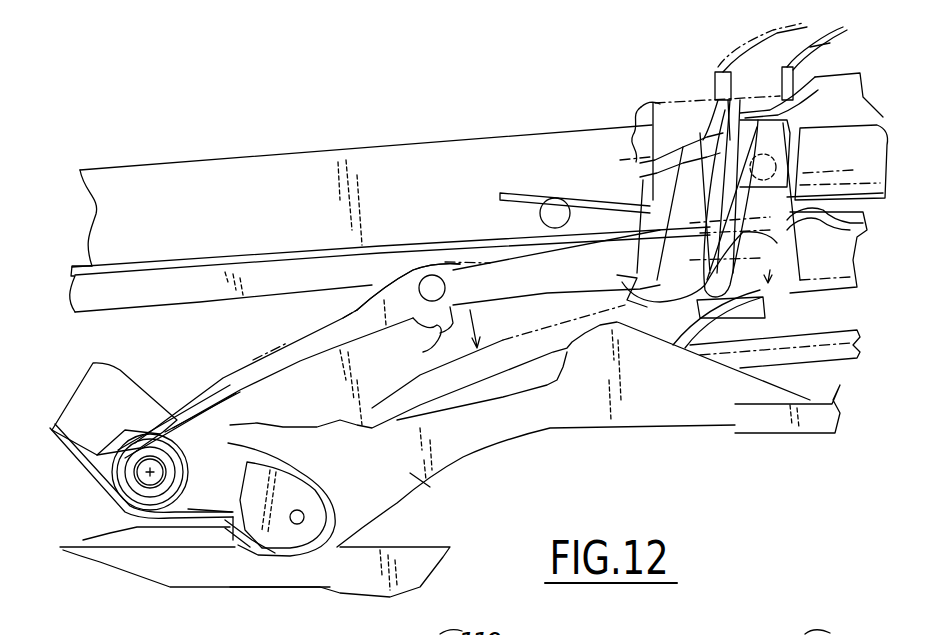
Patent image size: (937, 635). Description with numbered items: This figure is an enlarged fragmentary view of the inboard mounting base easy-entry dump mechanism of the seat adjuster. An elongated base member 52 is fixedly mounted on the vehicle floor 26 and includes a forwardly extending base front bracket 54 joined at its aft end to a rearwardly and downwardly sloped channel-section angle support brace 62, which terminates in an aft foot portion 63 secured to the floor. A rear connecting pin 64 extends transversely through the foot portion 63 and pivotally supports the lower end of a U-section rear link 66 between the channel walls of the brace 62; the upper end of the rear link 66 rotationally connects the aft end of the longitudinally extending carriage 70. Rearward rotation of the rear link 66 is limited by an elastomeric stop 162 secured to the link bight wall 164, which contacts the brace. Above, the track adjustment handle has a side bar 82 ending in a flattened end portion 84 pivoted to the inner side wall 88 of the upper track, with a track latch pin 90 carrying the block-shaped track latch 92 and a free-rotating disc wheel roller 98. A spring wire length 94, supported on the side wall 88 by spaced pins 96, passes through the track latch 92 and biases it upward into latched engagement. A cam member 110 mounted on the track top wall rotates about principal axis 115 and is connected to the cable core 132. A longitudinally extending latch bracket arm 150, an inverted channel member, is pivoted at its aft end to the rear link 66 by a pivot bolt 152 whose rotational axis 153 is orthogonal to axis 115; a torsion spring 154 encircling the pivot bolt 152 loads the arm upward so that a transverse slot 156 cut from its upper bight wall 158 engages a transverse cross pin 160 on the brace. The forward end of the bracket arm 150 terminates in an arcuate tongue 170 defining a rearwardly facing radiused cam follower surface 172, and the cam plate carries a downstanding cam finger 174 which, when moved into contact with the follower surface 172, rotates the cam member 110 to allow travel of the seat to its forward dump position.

The vehicle floor 26 is at (440, 547).
The base member 52 is at (470, 457).
The base front bracket 54 is at (800, 420).
The angle support brace 62 is at (430, 487).
The aft foot portion 63 is at (157, 537).
The rear connecting pin 64 is at (302, 515).
The rear link 66 is at (107, 370).
The carriage 70 is at (218, 156).
The side bar 82 is at (843, 216).
The flattened end portion 84 is at (840, 175).
The inner side wall 88 is at (343, 157).
The track latch pin 90 is at (718, 214).
The track latch 92 is at (857, 103).
The spring wire length 94 is at (510, 193).
The pin 96 is at (540, 213).
The disc wheel roller 98 is at (652, 183).
The cam member 110 is at (647, 102).
The principal axis 115 is at (727, 48).
The cable core 132 is at (807, 50).
The latch bracket arm 150 is at (333, 344).
The pivot bolt 152 is at (127, 502).
The rotational axis 153 is at (145, 468).
The torsion spring 154 is at (262, 376).
The transverse slot 156 is at (433, 330).
The upper bight wall 158 is at (203, 410).
The cross pin 160 is at (447, 286).
The elastomeric stop 162 is at (413, 268).
The link bight wall 164 is at (230, 527).
The tongue 170 is at (773, 298).
The cam follower surface 172 is at (637, 278).
The cam finger 174 is at (813, 248).